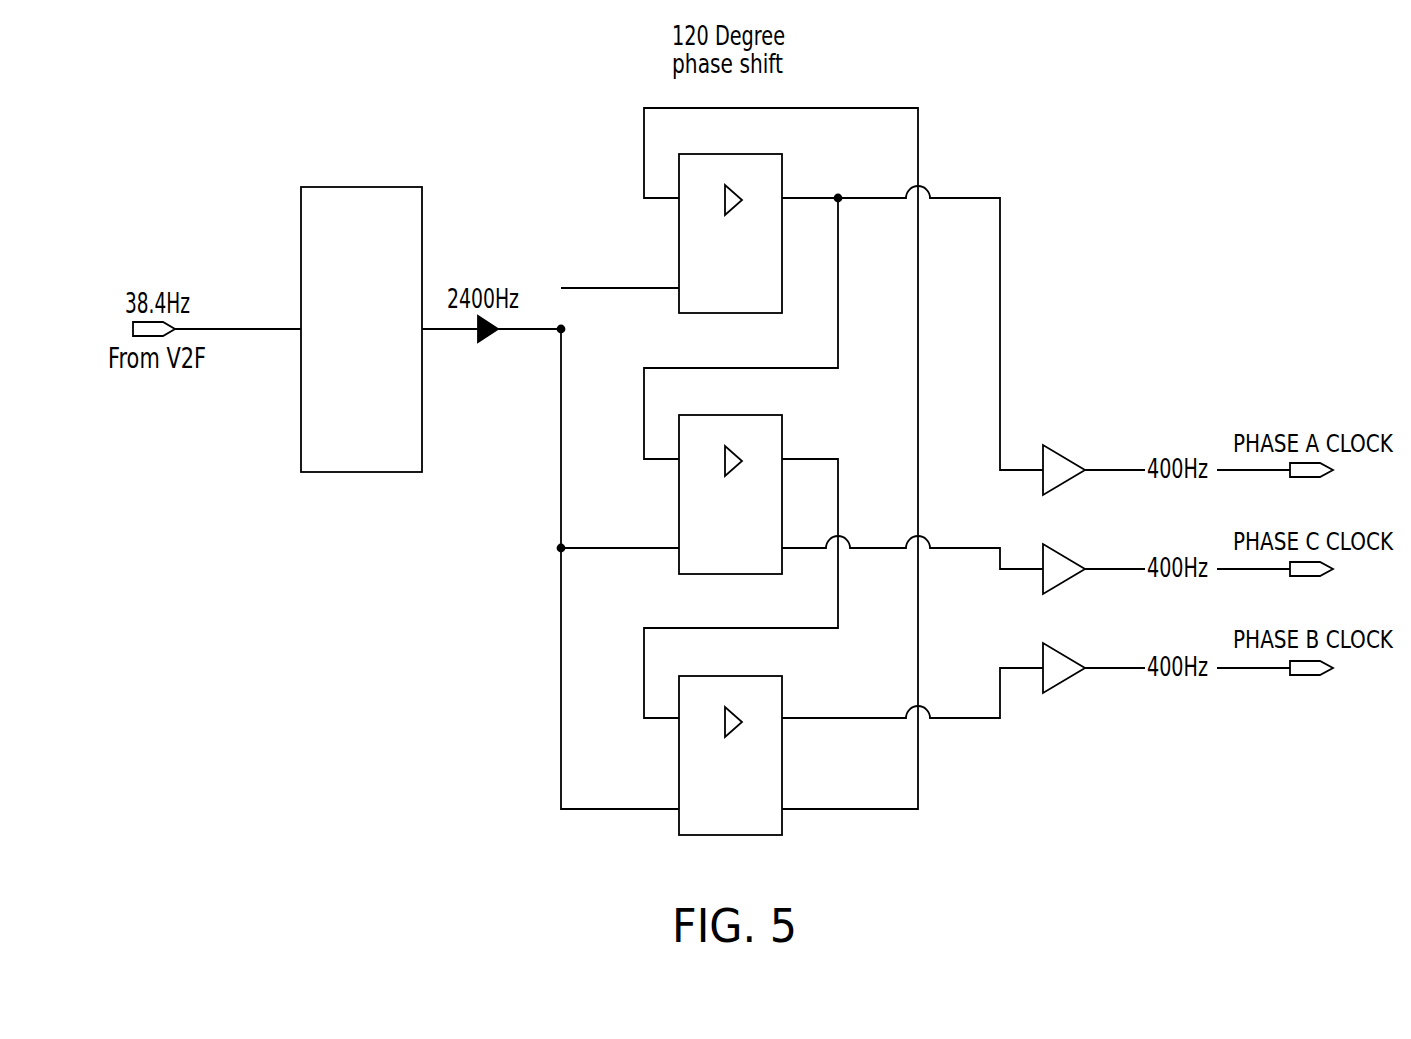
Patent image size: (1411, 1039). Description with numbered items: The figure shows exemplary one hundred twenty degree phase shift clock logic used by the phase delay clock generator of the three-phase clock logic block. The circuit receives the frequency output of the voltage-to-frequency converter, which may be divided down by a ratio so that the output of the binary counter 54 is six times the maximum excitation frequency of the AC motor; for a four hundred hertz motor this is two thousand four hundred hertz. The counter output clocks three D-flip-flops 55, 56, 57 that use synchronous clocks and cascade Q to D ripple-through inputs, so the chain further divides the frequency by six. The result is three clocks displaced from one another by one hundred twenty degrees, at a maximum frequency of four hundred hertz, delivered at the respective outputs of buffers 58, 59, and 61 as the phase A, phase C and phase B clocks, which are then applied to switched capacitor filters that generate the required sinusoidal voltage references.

The binary counter 54 is at (301, 240).
The D-flip-flop 55 is at (679, 243).
The D-flip-flop 56 is at (679, 503).
The D-flip-flop 57 is at (679, 763).
The buffer 58 is at (1062, 452).
The buffer 59 is at (1062, 551).
The buffer 61 is at (1062, 650).